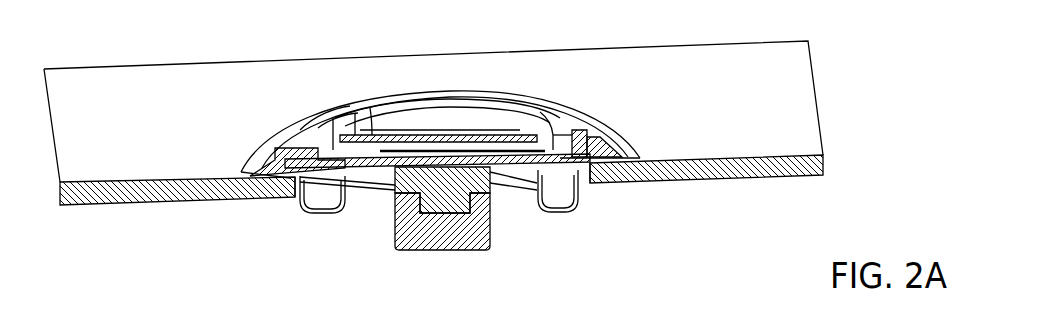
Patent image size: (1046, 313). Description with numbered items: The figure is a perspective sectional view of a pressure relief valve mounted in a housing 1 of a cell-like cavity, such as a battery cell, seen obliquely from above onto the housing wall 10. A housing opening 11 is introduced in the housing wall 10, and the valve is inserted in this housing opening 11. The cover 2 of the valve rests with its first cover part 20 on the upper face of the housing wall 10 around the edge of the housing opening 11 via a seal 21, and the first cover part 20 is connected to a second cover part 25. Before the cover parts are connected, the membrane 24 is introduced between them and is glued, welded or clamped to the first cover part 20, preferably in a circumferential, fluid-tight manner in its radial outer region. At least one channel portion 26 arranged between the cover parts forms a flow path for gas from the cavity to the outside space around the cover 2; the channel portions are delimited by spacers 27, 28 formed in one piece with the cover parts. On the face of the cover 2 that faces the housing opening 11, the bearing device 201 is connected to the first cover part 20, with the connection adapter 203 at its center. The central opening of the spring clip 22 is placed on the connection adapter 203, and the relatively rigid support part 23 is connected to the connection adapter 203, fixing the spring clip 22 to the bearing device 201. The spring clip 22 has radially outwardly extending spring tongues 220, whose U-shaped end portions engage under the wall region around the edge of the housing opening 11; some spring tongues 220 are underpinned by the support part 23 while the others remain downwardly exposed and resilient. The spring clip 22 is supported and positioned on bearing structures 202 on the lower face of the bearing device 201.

The housing 1 is at (686, 200).
The cover 2 is at (278, 100).
The housing wall 10 is at (741, 181).
The housing opening 11 is at (306, 207).
The first cover part 20 is at (503, 90).
The seal 21 is at (622, 150).
The spring clip 22 is at (522, 193).
The support part 23 is at (474, 250).
The membrane 24 is at (430, 134).
The second cover part 25 is at (468, 93).
The channel portion 26 is at (553, 125).
The spacer 27 is at (333, 117).
The spacer 28 is at (373, 130).
The bearing device 201 is at (580, 176).
The bearing structure 202 is at (306, 190).
The connection adapter 203 is at (441, 250).
The spring tongue 220 is at (321, 213).